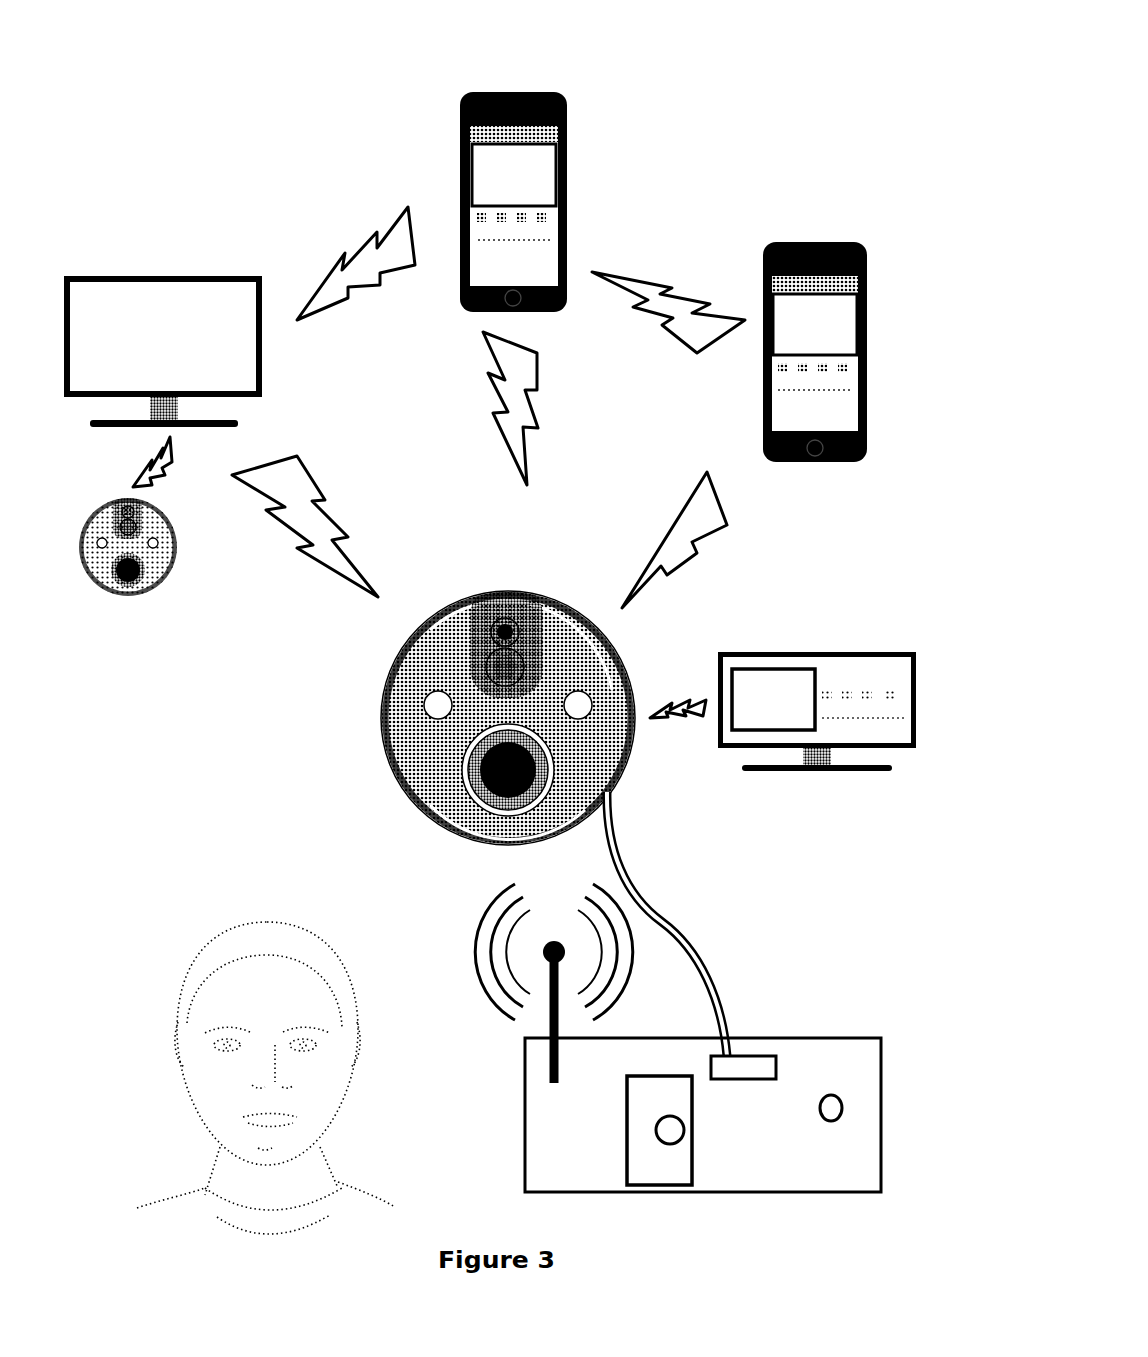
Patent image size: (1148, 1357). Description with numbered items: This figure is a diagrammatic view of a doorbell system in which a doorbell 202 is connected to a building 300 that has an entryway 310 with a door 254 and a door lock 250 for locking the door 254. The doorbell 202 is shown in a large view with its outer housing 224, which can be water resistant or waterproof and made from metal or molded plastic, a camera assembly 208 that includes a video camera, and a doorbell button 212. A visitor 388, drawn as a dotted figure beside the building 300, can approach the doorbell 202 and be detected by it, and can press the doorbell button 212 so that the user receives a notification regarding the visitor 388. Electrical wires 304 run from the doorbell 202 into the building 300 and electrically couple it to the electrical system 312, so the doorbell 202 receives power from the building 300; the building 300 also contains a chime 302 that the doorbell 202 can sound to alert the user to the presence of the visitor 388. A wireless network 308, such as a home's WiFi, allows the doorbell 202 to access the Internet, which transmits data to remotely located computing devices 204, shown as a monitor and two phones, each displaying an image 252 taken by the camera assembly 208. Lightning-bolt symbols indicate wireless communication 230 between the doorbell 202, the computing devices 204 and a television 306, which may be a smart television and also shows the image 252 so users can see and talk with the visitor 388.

The doorbell 202 is at (354, 671).
The computing device 204 is at (505, 68).
The camera assembly 208 is at (492, 656).
The doorbell button 212 is at (470, 776).
The outer housing 224 is at (382, 695).
The wireless communication 230 is at (340, 262).
The door lock 250 is at (670, 1145).
The image 252 is at (543, 146).
The door 254 is at (627, 1113).
The building 300 is at (806, 1038).
The chime 302 is at (834, 1094).
The electrical wires 304 is at (670, 902).
The television 306 is at (792, 655).
The wireless network 308 is at (470, 913).
The entryway 310 is at (608, 1130).
The electrical system 312 is at (748, 1056).
The visitor 388 is at (192, 1138).